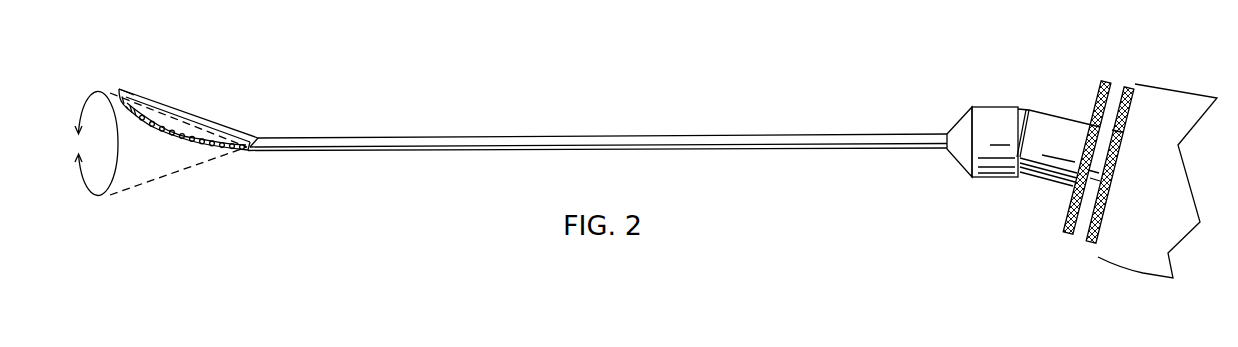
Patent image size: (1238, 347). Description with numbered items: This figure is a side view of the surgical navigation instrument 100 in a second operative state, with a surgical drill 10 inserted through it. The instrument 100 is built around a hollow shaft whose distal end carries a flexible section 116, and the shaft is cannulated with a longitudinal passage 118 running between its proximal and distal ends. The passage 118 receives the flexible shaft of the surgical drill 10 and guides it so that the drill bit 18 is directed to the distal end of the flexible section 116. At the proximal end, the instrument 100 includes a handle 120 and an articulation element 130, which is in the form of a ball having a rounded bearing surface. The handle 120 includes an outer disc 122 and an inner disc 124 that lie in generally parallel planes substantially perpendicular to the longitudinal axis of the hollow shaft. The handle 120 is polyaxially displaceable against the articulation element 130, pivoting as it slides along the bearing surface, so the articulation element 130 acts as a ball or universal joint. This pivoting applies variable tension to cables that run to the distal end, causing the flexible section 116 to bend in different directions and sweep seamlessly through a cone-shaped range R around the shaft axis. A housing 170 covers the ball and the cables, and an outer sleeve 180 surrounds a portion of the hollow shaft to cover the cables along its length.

The surgical navigation instrument 100 is at (758, 95).
The surgical drill 10 is at (1166, 188).
The drill bit 18 is at (118, 86).
The flexible section 116 is at (200, 133).
The longitudinal passage 118 is at (125, 97).
The handle 120 is at (1075, 120).
The outer disc 122 is at (1090, 247).
The inner disc 124 is at (1068, 236).
The articulation element 130 is at (1025, 111).
The housing 170 is at (983, 178).
The sleeve 180 is at (525, 135).
The cone-shaped range R is at (142, 173).